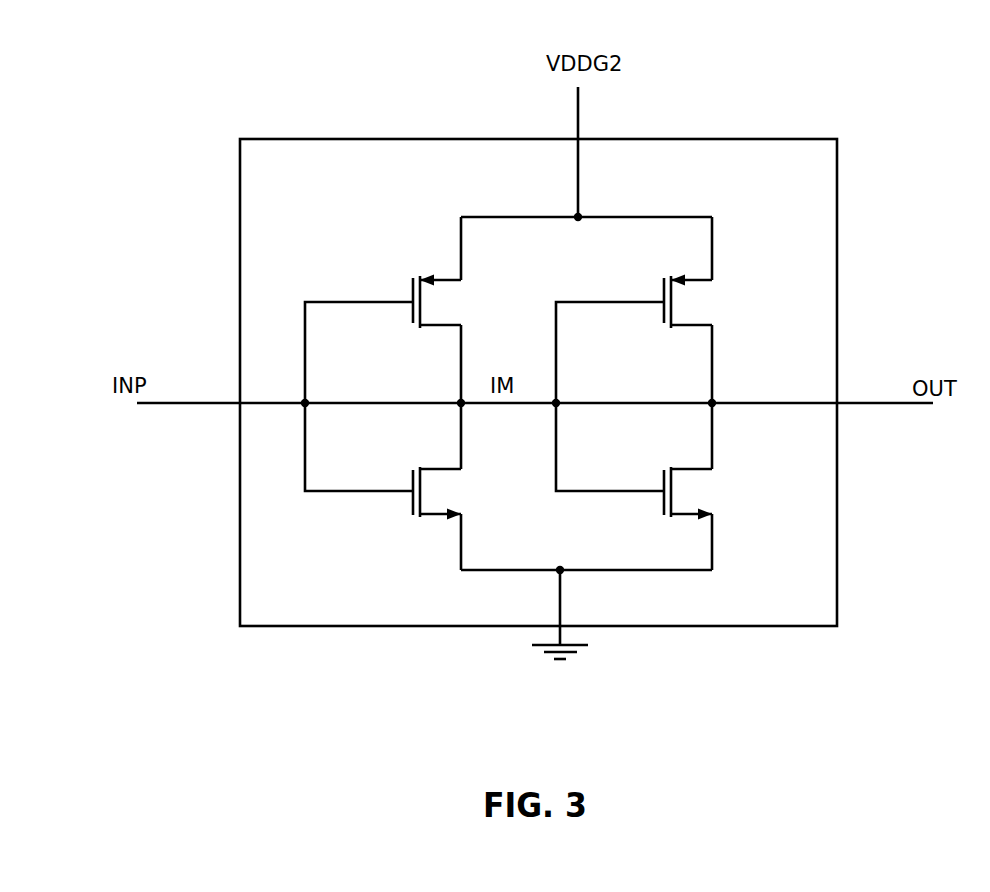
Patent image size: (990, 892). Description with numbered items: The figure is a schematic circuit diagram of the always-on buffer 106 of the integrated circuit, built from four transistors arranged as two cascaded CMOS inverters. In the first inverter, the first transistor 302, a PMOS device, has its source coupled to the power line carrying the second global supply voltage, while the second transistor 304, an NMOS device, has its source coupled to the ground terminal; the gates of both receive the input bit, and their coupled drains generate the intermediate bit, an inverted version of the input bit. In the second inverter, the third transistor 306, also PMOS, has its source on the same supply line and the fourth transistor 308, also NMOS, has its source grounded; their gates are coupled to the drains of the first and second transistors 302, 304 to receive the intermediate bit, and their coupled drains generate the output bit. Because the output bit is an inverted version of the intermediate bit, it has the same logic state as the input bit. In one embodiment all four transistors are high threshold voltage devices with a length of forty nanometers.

The always-on buffer 106 is at (538, 382).
The first transistor 302 is at (411, 282).
The second transistor 304 is at (411, 504).
The third transistor 306 is at (662, 289).
The fourth transistor 308 is at (662, 503).